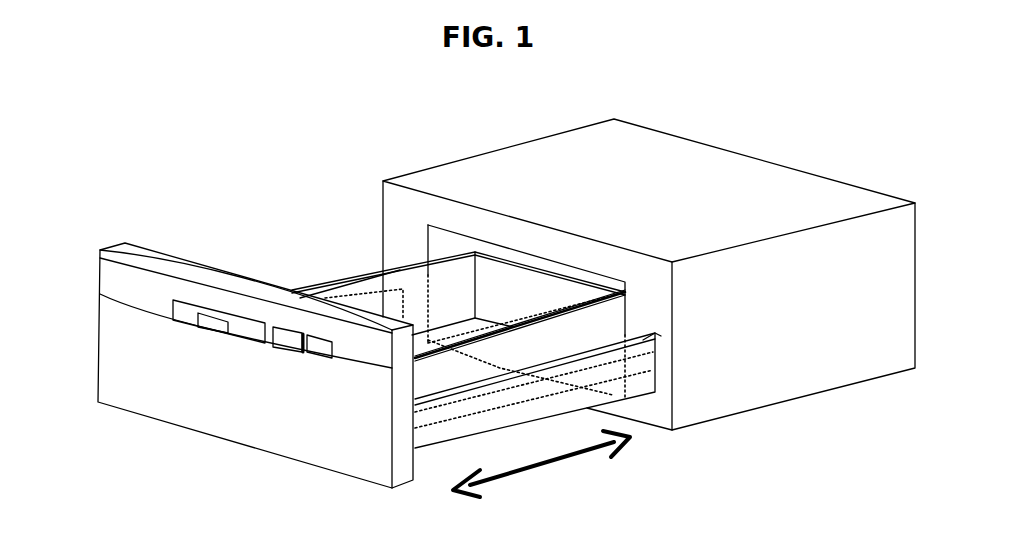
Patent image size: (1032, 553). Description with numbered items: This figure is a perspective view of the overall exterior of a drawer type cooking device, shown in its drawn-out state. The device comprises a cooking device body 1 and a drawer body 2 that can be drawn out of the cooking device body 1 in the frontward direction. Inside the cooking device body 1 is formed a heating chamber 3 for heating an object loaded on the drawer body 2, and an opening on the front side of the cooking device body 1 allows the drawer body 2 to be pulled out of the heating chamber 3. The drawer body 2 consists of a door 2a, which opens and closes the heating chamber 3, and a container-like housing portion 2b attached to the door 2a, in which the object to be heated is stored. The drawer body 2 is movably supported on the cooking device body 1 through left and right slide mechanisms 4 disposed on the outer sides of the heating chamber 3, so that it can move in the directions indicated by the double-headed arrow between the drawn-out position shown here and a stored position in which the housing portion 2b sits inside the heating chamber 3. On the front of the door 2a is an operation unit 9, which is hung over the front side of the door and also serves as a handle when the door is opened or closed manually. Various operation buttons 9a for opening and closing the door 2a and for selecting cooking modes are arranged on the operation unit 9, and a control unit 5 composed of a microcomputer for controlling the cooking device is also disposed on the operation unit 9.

The cooking device body 1 is at (837, 197).
The drawer body 2 is at (128, 245).
The door 2a is at (100, 323).
The housing portion 2b is at (453, 300).
The heating chamber 3 is at (467, 245).
The slide mechanism 4 is at (366, 282).
The control unit 5 is at (215, 326).
The operation unit 9 is at (315, 377).
The operation buttons 9a is at (287, 346).